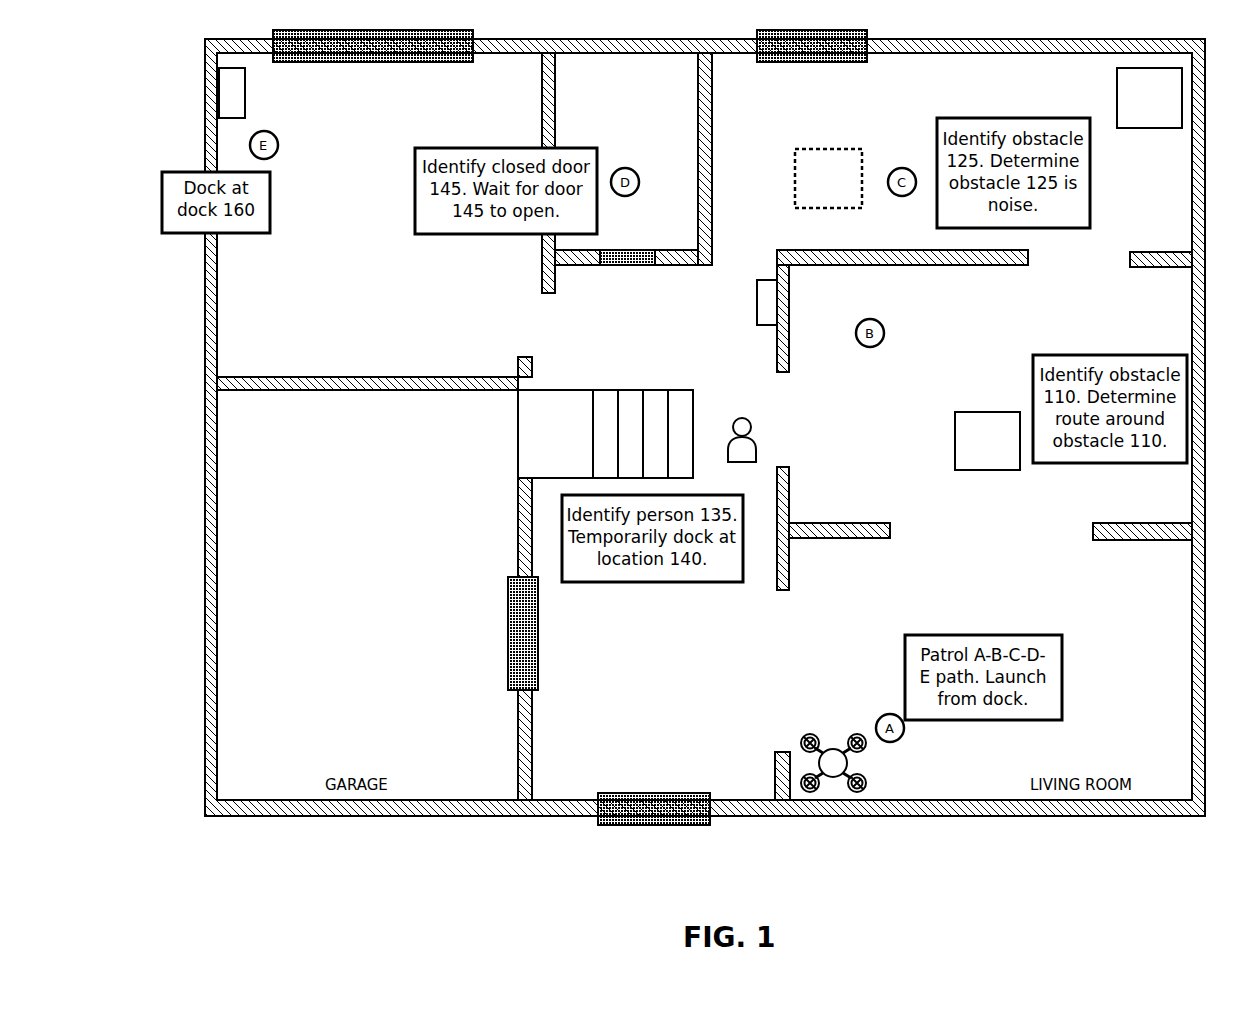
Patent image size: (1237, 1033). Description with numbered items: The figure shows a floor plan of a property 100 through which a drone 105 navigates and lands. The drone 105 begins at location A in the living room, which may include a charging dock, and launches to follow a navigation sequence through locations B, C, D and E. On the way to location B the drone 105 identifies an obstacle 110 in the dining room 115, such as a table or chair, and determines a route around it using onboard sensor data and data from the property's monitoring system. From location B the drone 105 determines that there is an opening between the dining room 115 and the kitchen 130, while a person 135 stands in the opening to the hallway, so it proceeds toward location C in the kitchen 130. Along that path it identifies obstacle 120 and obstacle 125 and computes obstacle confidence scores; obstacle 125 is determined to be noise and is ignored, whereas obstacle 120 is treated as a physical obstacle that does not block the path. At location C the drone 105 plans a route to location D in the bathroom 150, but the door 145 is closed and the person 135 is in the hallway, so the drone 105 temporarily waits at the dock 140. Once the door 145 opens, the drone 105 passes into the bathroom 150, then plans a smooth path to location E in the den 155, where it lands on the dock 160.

The property 100 is at (205, 323).
The drone 105 is at (803, 738).
The obstacle 110 is at (1020, 470).
The dining room 115 is at (993, 300).
The obstacle 120 is at (1120, 128).
The obstacle 125 is at (812, 149).
The kitchen 130 is at (998, 80).
The person 135 is at (756, 456).
The dock 140 is at (757, 290).
The door 145 is at (612, 266).
The bathroom 150 is at (607, 90).
The den 155 is at (366, 347).
The dock 160 is at (245, 82).